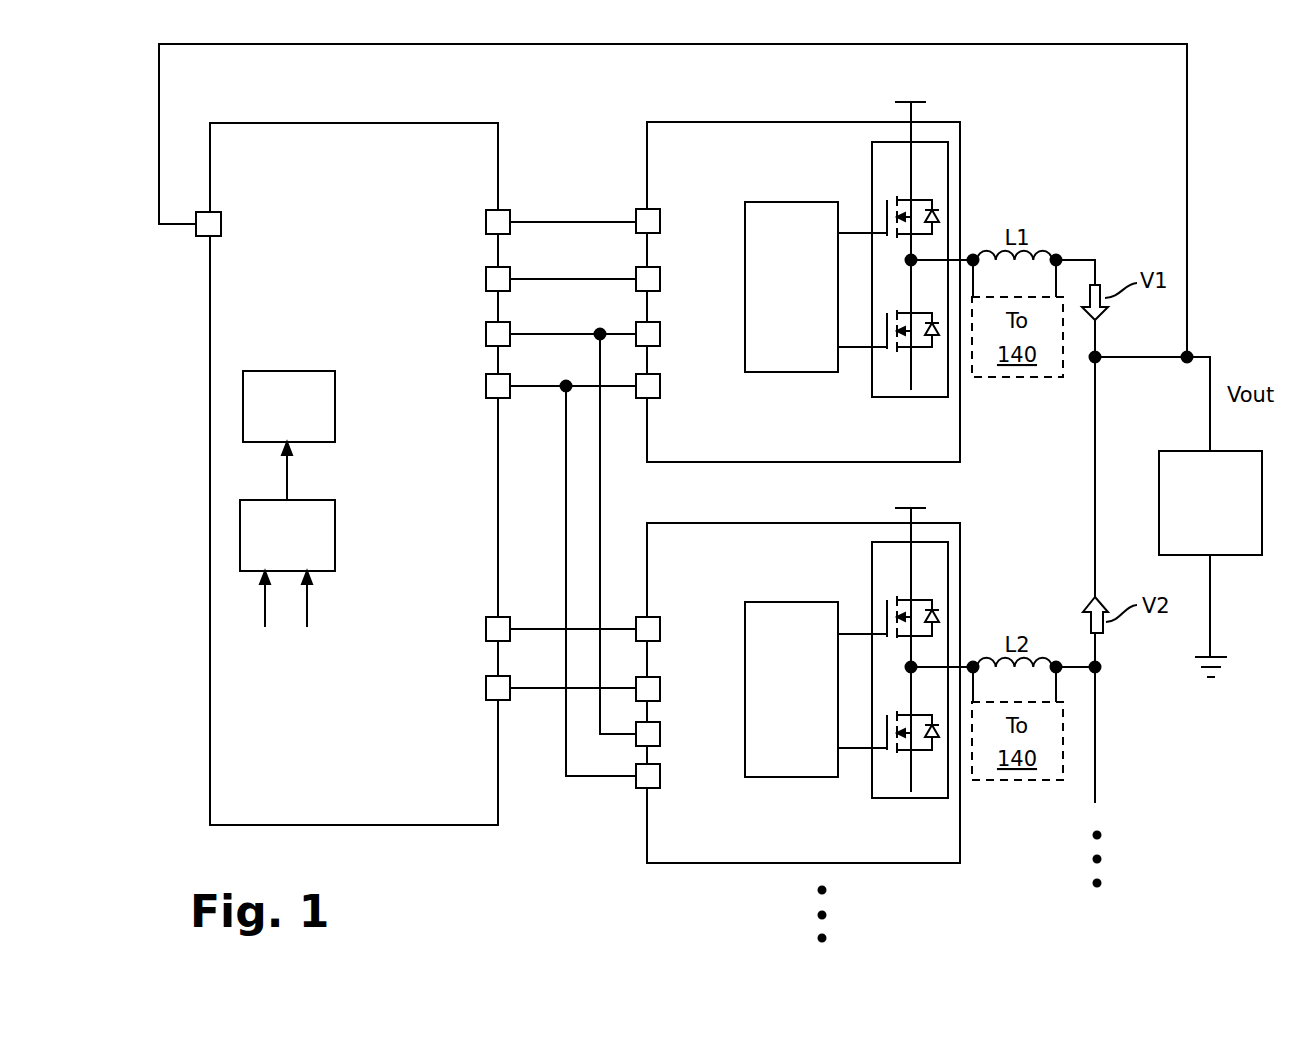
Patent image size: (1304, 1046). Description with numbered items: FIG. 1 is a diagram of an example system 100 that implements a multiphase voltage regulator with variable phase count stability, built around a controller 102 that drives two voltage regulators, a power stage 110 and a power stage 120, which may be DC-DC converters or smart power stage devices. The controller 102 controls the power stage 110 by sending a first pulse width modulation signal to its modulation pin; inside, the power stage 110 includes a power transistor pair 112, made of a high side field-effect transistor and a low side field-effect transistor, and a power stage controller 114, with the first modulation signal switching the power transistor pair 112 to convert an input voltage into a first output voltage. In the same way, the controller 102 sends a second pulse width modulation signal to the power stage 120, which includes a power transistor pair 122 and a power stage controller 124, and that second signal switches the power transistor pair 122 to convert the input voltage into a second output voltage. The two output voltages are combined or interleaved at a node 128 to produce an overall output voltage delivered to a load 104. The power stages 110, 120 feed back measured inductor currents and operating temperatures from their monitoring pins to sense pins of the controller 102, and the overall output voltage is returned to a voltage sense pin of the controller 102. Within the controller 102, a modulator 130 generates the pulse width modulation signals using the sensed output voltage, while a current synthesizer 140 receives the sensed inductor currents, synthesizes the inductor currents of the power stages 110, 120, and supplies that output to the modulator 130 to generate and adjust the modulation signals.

The system 100 is at (676, 503).
The controller 102 is at (353, 474).
The load 104 is at (1210, 564).
The power stage 110 is at (795, 261).
The power transistor pair 112 is at (931, 142).
The power stage controller 114 is at (791, 287).
The power stage 120 is at (833, 700).
The power transistor pair 122 is at (931, 542).
The power stage controller 124 is at (791, 689).
The node 128 is at (1099, 359).
The modulator 130 is at (289, 406).
The current synthesizer 140 is at (287, 552).